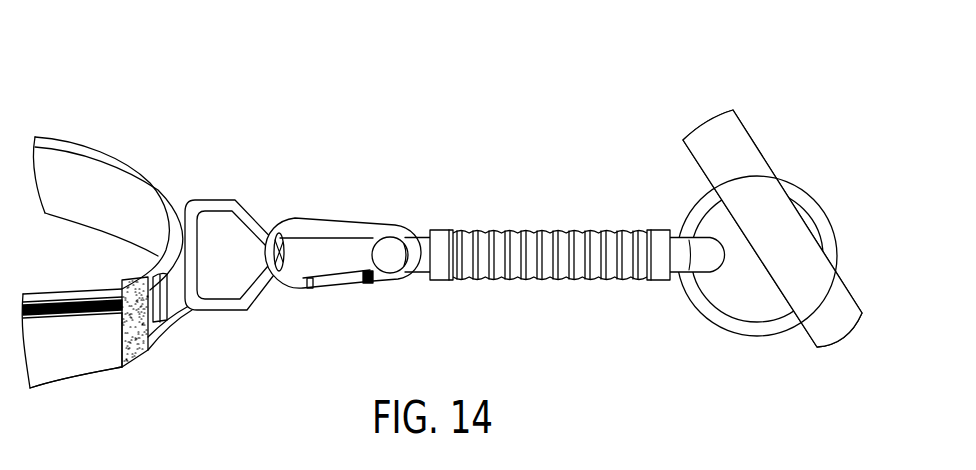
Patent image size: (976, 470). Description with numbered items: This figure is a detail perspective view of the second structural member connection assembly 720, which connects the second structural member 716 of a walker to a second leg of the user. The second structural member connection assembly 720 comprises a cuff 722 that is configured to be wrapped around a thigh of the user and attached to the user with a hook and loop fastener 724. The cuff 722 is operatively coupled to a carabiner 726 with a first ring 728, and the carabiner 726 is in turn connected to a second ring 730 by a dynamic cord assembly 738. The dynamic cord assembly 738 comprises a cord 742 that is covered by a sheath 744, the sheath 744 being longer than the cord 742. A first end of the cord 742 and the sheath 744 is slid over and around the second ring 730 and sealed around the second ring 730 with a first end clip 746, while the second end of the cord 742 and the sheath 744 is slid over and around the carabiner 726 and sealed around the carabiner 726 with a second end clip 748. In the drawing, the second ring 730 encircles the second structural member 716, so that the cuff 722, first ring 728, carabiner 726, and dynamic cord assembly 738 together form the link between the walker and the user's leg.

The second structural member 716 is at (745, 150).
The second structural member connection assembly 720 is at (377, 62).
The cuff 722 is at (115, 158).
The hook and loop fastener 724 is at (133, 353).
The carabiner 726 is at (340, 283).
The first ring 728 is at (250, 297).
The second ring 730 is at (737, 325).
The dynamic cord assembly 738 is at (565, 233).
The cord 742 is at (682, 233).
The sheath 744 is at (557, 280).
The first end clip 746 is at (658, 282).
The second end clip 748 is at (442, 280).